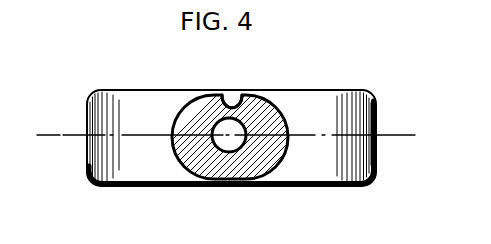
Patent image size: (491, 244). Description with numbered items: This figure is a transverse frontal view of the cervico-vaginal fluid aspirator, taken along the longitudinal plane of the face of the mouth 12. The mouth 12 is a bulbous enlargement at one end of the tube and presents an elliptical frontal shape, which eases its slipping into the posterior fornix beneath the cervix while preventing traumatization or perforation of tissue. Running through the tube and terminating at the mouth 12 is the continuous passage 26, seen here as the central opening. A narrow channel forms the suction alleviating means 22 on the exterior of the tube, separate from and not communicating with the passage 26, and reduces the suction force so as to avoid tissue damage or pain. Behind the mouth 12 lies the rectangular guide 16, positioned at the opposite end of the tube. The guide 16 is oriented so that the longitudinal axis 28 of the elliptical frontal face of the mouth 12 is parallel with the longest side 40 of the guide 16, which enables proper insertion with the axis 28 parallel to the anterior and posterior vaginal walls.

The mouth 12 is at (195, 107).
The guide 16 is at (135, 162).
The suction alleviating means 22 is at (232, 108).
The passage 26 is at (229, 150).
The longitudinal axis 28 is at (63, 132).
The longest side 40 is at (250, 187).